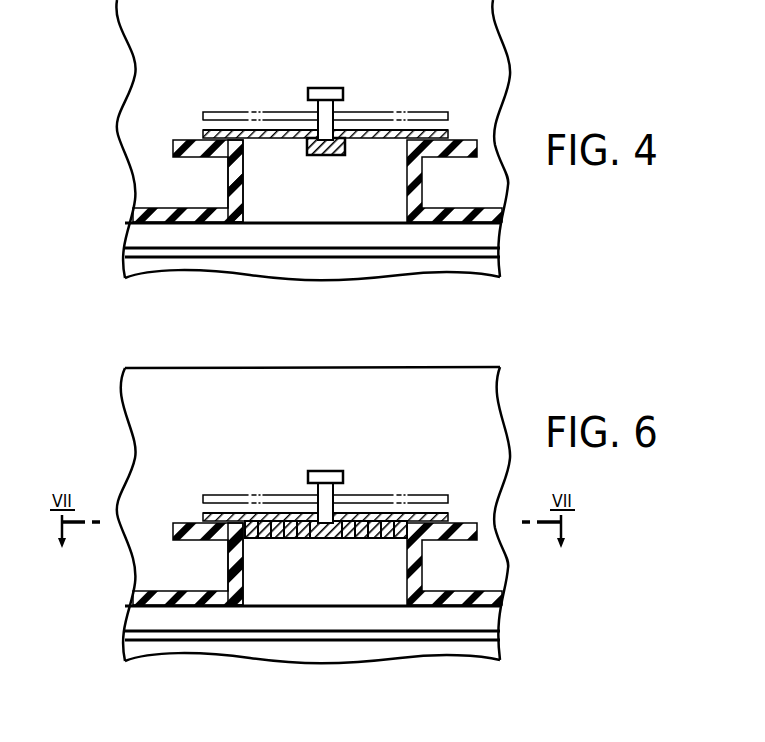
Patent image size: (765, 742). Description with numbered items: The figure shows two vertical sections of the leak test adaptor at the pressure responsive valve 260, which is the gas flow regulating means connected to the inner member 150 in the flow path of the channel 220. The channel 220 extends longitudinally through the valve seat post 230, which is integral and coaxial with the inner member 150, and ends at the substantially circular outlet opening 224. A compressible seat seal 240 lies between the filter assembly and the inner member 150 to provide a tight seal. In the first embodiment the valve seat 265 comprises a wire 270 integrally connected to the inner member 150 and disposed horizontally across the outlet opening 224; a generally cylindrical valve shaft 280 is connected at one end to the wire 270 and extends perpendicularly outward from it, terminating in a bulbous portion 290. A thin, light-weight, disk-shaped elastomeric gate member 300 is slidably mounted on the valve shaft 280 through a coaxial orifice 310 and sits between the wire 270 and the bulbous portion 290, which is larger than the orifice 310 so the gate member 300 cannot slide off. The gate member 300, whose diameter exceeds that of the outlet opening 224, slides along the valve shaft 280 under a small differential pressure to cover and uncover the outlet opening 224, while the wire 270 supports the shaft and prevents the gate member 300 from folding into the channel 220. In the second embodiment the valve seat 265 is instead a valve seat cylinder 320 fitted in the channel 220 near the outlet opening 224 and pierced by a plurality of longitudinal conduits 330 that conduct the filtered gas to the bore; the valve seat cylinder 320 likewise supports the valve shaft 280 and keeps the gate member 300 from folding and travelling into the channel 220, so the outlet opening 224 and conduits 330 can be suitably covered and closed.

In FIG. 4, the inner member 150 is at (194, 206).
In FIG. 6, the inner member 150 is at (194, 589).
In FIG. 4, the channel 220 is at (245, 182).
In FIG. 6, the channel 220 is at (247, 558).
In FIG. 4, the outlet opening 224 is at (404, 144).
In FIG. 6, the outlet opening 224 is at (403, 541).
In FIG. 4, the valve seat post 230 is at (423, 163).
In FIG. 6, the valve seat post 230 is at (423, 546).
In FIG. 4, the seat seal 240 is at (312, 252).
In FIG. 6, the seat seal 240 is at (497, 632).
In FIG. 4, the pressure responsive valve 260 is at (357, 83).
In FIG. 6, the pressure responsive valve 260 is at (357, 463).
In FIG. 4, the valve seat 265 is at (333, 154).
In FIG. 4, the wire 270 is at (313, 152).
In FIG. 4, the valve shaft 280 is at (333, 118).
In FIG. 6, the valve shaft 280 is at (333, 500).
In FIG. 4, the bulbous portion 290 is at (313, 90).
In FIG. 6, the bulbous portion 290 is at (312, 474).
In FIG. 4, the gate member 300 is at (207, 136).
In FIG. 6, the gate member 300 is at (207, 519).
In FIG. 4, the orifice 310 is at (316, 130).
In FIG. 6, the orifice 310 is at (316, 513).
In FIG. 6, the valve seat cylinder 320 is at (342, 541).
In FIG. 6, the longitudinal conduits 330 is at (283, 541).